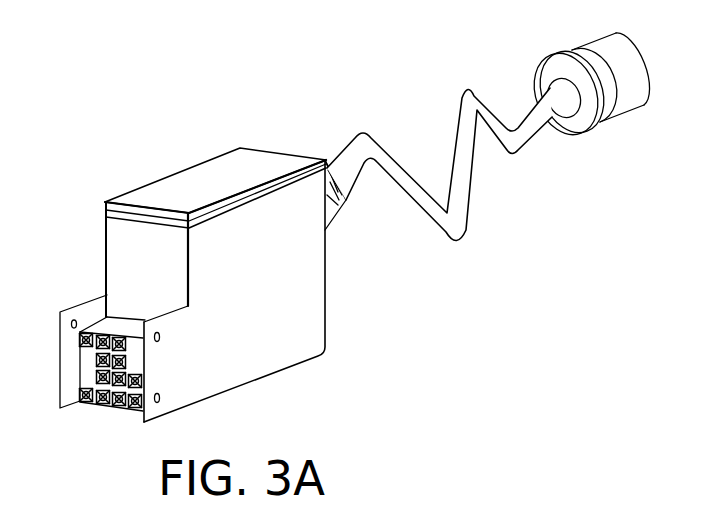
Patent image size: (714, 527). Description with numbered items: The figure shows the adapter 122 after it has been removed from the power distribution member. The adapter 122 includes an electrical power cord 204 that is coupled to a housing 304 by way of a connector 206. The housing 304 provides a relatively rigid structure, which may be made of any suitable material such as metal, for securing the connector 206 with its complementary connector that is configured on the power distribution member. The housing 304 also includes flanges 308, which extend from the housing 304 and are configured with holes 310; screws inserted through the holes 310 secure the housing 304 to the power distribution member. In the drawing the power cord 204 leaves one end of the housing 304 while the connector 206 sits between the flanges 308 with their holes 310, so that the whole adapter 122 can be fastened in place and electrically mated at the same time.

The cable assembly 122 is at (336, 235).
The electrical power cord 204 is at (363, 128).
The connector 206 is at (116, 403).
The housing 304 is at (327, 293).
The flanges 308 is at (167, 411).
The holes 310 is at (71, 323).